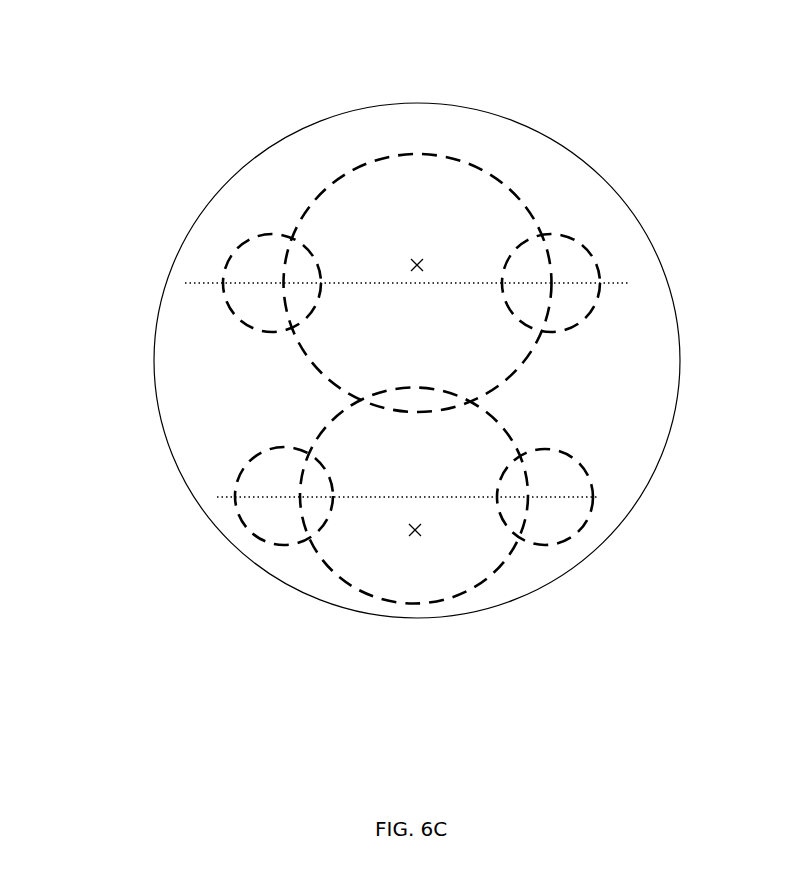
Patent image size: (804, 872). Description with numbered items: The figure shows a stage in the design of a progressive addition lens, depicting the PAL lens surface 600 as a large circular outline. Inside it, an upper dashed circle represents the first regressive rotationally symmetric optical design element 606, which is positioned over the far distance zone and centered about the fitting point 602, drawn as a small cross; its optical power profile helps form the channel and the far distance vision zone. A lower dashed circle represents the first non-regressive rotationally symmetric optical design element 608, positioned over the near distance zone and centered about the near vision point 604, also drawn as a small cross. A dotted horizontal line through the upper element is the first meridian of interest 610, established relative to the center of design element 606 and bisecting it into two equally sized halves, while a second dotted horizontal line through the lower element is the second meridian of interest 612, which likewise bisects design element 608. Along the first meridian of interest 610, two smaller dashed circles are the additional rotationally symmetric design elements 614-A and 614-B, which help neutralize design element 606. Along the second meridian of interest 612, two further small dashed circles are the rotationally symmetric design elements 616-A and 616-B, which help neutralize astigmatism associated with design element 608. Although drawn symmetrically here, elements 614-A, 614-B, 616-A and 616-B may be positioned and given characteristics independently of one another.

The PAL lens surface 600 is at (106, 80).
The fitting point 602 is at (399, 285).
The near vision point 604 is at (399, 516).
The first regressive rotationally symmetric optical design element 606 is at (539, 197).
The first non-regressive rotationally symmetric optical design element 608 is at (524, 426).
The first meridian of interest 610 is at (195, 276).
The second meridian of interest 612 is at (203, 483).
The rotationally symmetric design element 614-A is at (256, 227).
The rotationally symmetric design element 614-B is at (604, 245).
The rotationally symmetric design element 616-A is at (254, 544).
The rotationally symmetric design element 616-B is at (581, 542).